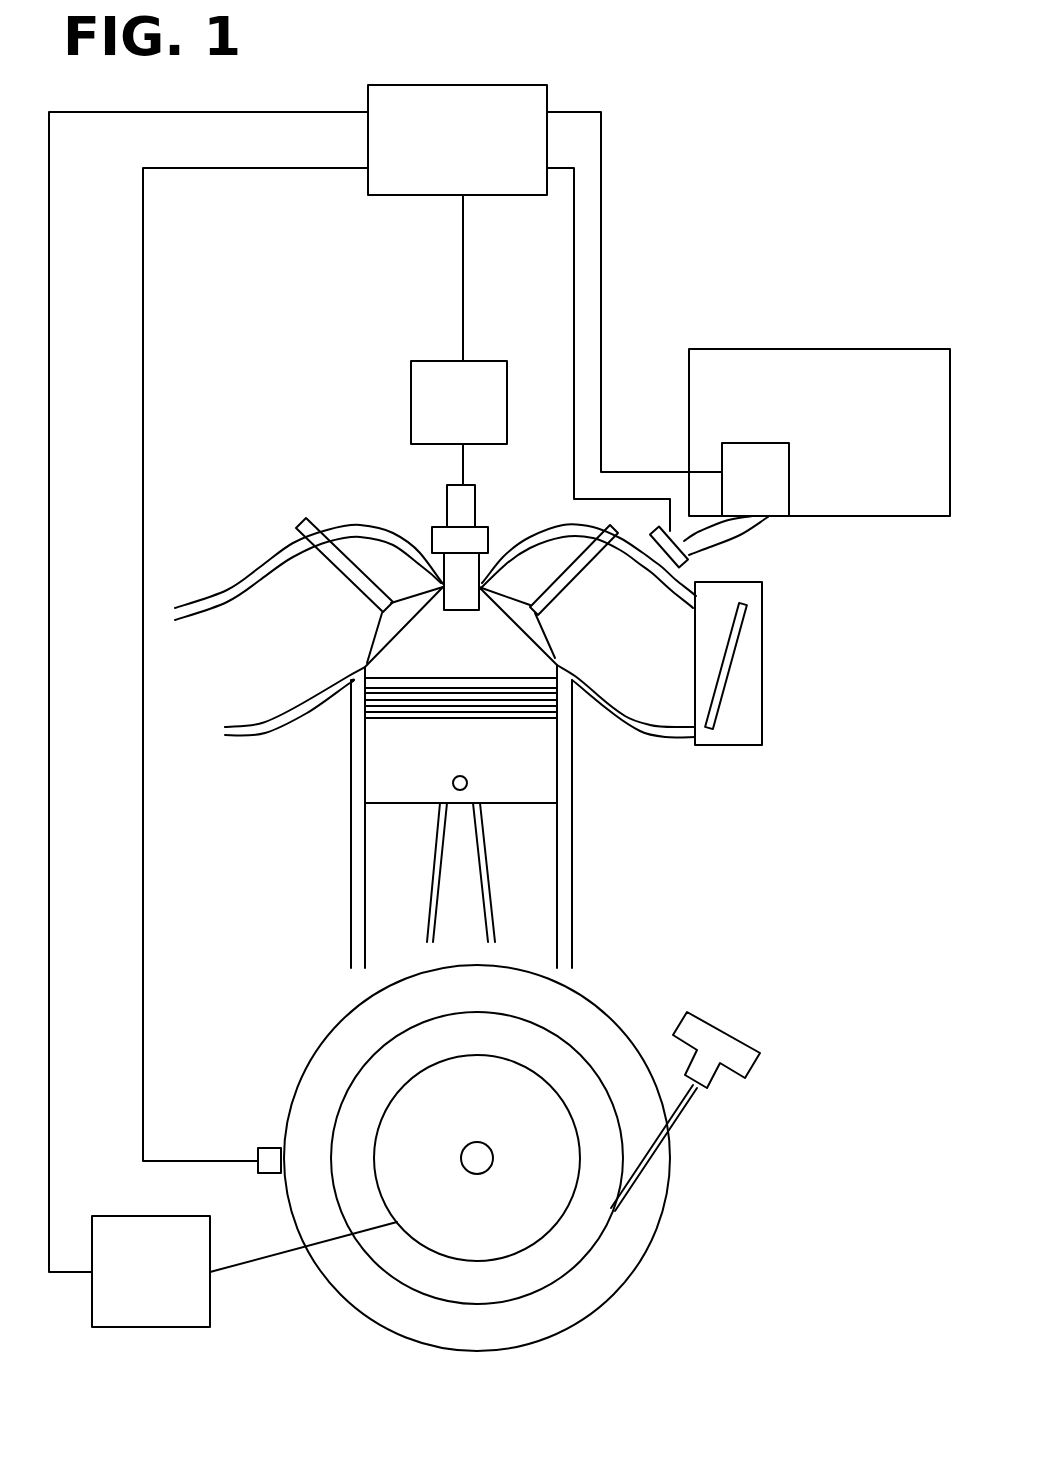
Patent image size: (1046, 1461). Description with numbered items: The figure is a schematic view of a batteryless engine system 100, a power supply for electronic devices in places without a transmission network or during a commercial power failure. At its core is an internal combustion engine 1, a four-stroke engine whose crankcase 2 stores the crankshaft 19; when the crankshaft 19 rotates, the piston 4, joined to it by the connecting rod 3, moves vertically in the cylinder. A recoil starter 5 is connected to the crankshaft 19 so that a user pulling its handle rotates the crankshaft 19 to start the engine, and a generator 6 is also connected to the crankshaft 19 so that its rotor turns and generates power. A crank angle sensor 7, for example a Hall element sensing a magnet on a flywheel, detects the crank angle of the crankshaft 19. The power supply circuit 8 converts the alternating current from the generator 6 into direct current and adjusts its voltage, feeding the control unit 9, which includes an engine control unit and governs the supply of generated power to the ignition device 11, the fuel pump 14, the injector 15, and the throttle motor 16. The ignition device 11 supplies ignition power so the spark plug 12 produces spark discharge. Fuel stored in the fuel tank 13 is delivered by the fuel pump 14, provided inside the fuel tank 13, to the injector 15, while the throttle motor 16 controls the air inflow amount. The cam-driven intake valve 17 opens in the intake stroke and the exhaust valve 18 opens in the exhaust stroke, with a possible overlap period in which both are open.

The batteryless engine system 100 is at (739, 66).
The internal combustion engine 1 is at (600, 863).
The crankcase 2 is at (353, 1005).
The connecting rod 3 is at (452, 867).
The piston 4 is at (380, 773).
The recoil starter 5 is at (708, 1022).
The generator 6 is at (518, 1218).
The crank angle sensor 7 is at (275, 1148).
The power supply circuit 8 is at (138, 1216).
The control unit 9 is at (527, 88).
The ignition device 11 is at (492, 365).
The spark plug 12 is at (443, 527).
The fuel tank 13 is at (888, 349).
The fuel pump 14 is at (758, 443).
The injector 15 is at (692, 560).
The throttle motor 16 is at (763, 632).
The intake valve 17 is at (567, 567).
The exhaust valve 18 is at (300, 520).
The crankshaft 19 is at (485, 1145).